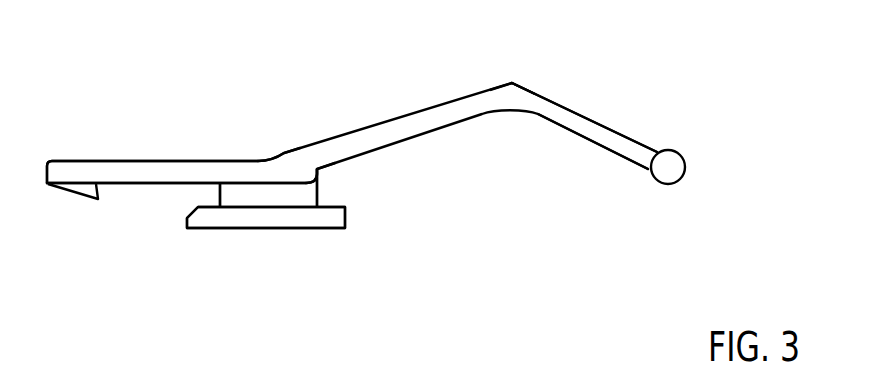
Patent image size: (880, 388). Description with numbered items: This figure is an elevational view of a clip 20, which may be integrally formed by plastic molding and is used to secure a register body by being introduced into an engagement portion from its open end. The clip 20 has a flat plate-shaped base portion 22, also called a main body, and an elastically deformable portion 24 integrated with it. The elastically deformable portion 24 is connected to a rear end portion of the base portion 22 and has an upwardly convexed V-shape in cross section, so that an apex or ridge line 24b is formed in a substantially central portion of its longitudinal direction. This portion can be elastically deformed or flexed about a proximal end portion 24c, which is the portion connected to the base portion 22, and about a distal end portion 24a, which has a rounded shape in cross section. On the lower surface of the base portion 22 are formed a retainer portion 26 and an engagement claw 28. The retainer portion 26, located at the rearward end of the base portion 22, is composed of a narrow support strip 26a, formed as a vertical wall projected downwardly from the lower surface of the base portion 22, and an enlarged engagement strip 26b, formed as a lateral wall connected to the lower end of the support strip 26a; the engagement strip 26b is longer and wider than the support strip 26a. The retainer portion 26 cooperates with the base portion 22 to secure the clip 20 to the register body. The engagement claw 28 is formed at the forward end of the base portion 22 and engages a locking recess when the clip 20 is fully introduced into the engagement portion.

The clip 20 is at (383, 95).
The base portion 22 is at (148, 172).
The elastically deformable portion 24 is at (585, 125).
The distal end portion 24a is at (665, 163).
The apex or ridge line 24b is at (512, 81).
The proximal end portion 24c is at (300, 170).
The retainer portion 26 is at (305, 231).
The support strip 26a is at (302, 197).
The engagement strip 26b is at (233, 222).
The engagement claw 28 is at (76, 190).